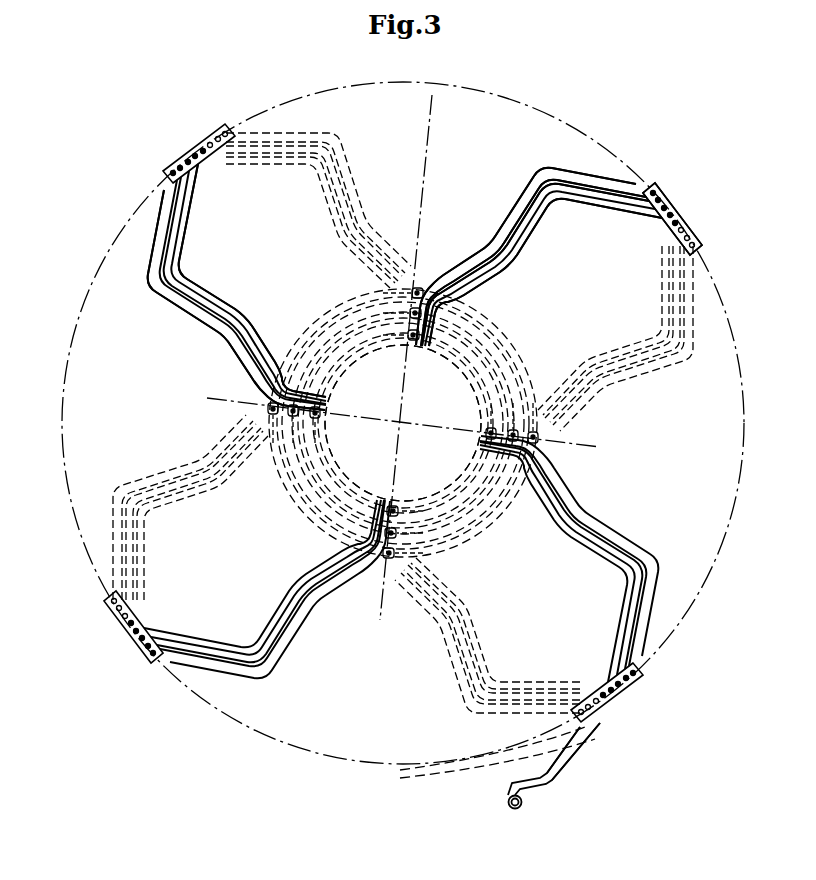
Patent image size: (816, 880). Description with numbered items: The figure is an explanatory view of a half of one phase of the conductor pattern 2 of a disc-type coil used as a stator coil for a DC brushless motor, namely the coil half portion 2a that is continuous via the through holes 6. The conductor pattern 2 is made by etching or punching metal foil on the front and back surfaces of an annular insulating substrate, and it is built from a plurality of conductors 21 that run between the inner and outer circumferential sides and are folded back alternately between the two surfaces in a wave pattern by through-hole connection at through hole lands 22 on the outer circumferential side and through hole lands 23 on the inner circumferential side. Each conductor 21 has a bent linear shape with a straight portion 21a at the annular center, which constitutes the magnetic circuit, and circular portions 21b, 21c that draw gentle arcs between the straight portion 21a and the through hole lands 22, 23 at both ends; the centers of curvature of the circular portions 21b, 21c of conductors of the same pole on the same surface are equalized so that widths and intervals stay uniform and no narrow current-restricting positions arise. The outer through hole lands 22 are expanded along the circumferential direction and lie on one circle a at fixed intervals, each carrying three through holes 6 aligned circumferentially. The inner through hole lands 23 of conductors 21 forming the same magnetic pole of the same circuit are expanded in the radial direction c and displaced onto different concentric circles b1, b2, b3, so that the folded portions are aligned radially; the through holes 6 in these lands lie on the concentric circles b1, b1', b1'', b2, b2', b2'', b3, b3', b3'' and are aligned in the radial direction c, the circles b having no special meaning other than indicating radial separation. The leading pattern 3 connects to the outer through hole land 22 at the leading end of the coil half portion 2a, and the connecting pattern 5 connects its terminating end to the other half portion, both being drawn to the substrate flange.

The conductor pattern 2 is at (176, 154).
The coil half portion 2a is at (660, 187).
The leading pattern 3 is at (554, 766).
The connecting pattern 5 is at (519, 740).
The through hole 6 is at (397, 423).
The conductor 21 is at (403, 423).
The straight portion 21a is at (545, 272).
The circular portion 21b is at (625, 212).
The circular portion 21c is at (471, 246).
The through hole land 22 is at (399, 423).
The through hole land 23 is at (392, 423).
The circle a is at (403, 429).
The concentric circle b is at (403, 423).
The concentric circle b1 is at (403, 423).
The concentric circle b1' is at (403, 423).
The concentric circle b1'' is at (403, 423).
The concentric circle b2 is at (431, 453).
The concentric circle b2' is at (427, 411).
The concentric circle b2'' is at (439, 423).
The concentric circle b3 is at (407, 435).
The concentric circle b3' is at (393, 423).
The concentric circle b3'' is at (403, 436).
The radial direction c is at (386, 357).